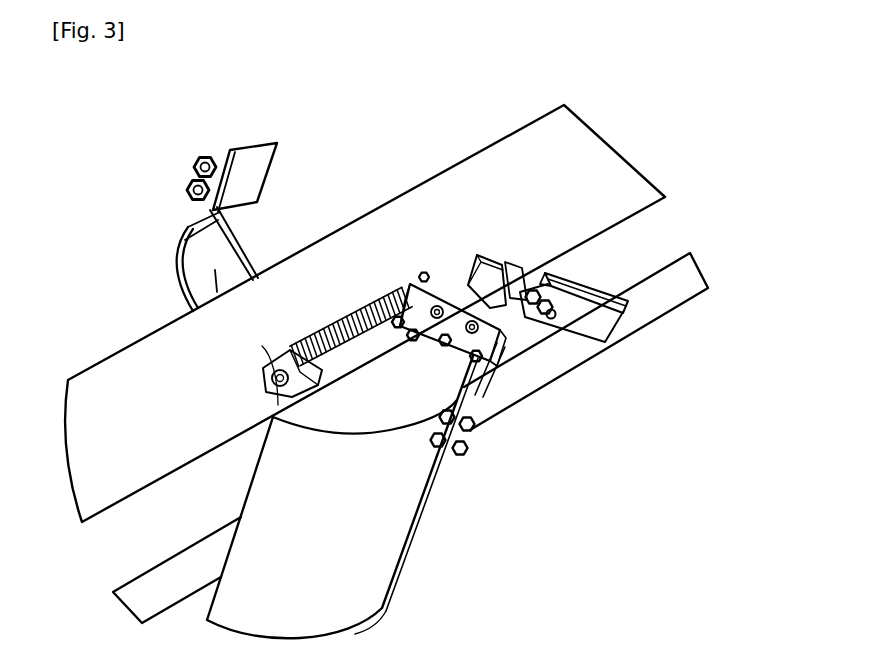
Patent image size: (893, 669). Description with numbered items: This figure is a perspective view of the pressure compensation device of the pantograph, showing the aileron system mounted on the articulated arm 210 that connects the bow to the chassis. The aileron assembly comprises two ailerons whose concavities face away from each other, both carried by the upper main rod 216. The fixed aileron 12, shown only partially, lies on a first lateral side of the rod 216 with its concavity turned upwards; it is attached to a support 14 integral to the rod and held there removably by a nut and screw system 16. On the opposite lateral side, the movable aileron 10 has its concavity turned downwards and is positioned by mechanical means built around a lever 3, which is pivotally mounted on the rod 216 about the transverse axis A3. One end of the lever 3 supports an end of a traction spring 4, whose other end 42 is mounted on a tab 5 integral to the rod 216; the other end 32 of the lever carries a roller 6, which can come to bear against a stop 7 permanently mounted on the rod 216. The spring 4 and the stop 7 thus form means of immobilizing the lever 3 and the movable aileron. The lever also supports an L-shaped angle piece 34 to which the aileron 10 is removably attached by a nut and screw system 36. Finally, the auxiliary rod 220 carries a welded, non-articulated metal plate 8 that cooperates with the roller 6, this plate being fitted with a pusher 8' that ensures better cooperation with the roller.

The articulated arm 210 is at (703, 190).
The upper main rod 216 is at (476, 192).
The auxiliary rod 220 is at (593, 368).
The movable aileron 10 is at (345, 590).
The lever 3 is at (415, 368).
The traction spring 4 is at (350, 292).
The tab 5 is at (458, 360).
The other end of traction spring 42 is at (262, 346).
The stop 7 is at (497, 252).
The roller 6 is at (517, 278).
The metal plate 8 is at (595, 271).
The pusher 8' is at (605, 207).
The other end of lever 32 is at (502, 338).
The L-shaped angle piece 34 is at (480, 395).
The pivot axis of lever A3 is at (473, 434).
The nut and screw system 36 is at (468, 454).
The fixed aileron 12 is at (165, 258).
The support 14 is at (217, 258).
The nut and screw system 16 is at (207, 140).